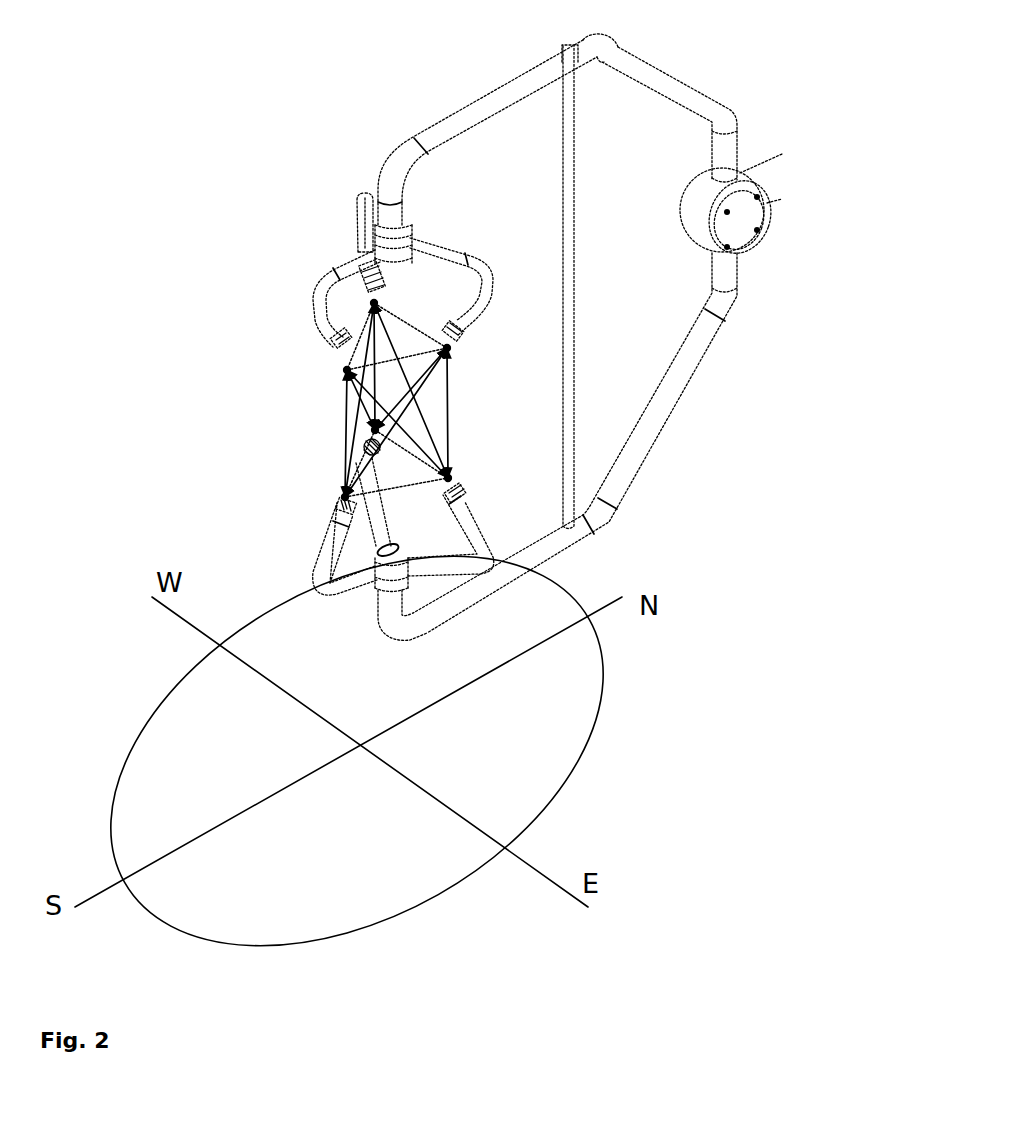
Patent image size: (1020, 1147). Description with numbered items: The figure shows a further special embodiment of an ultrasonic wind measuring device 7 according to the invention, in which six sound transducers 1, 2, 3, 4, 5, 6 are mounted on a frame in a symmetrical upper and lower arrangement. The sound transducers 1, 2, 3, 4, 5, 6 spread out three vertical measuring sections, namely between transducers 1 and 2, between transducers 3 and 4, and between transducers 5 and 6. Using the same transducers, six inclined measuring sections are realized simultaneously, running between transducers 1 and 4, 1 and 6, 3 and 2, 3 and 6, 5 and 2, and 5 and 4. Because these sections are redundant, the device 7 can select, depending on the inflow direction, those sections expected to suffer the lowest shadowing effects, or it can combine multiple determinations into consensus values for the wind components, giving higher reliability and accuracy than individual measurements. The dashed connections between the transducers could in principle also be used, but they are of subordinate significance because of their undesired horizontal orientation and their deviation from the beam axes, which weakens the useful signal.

The sound transducer 1 is at (336, 508).
The sound transducer 2 is at (335, 356).
The sound transducer 3 is at (382, 448).
The sound transducer 4 is at (380, 283).
The sound transducer 5 is at (461, 481).
The sound transducer 6 is at (460, 345).
The ultrasonic wind measuring device 7 is at (312, 218).